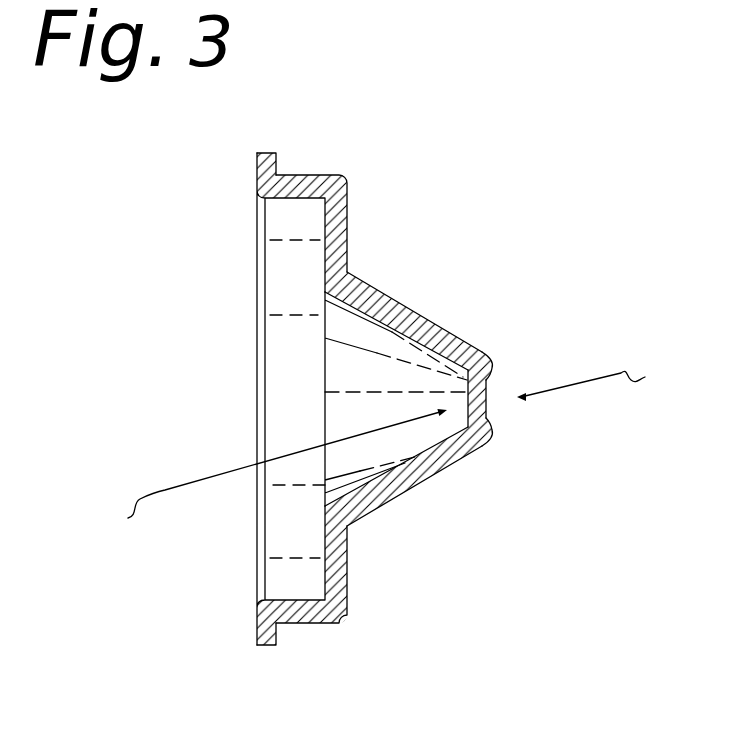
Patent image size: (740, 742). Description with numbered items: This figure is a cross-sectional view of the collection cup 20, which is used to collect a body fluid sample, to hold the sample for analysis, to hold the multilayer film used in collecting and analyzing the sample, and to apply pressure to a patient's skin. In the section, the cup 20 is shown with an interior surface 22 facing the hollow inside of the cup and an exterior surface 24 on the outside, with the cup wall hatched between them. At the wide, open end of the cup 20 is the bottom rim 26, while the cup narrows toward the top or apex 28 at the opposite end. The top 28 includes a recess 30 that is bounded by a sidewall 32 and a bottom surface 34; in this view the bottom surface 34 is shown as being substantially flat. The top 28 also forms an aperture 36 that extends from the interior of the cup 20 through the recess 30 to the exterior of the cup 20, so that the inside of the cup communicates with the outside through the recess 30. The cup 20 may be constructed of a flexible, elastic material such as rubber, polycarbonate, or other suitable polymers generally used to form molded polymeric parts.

The collection cup 20 is at (390, 407).
The interior surface 22 is at (392, 330).
The exterior surface 24 is at (413, 488).
The bottom rim 26 is at (257, 173).
The top or apex 28 is at (492, 367).
The recess 30 is at (601, 383).
The sidewall 32 is at (493, 377).
The bottom surface 34 is at (487, 381).
The aperture 36 is at (271, 470).